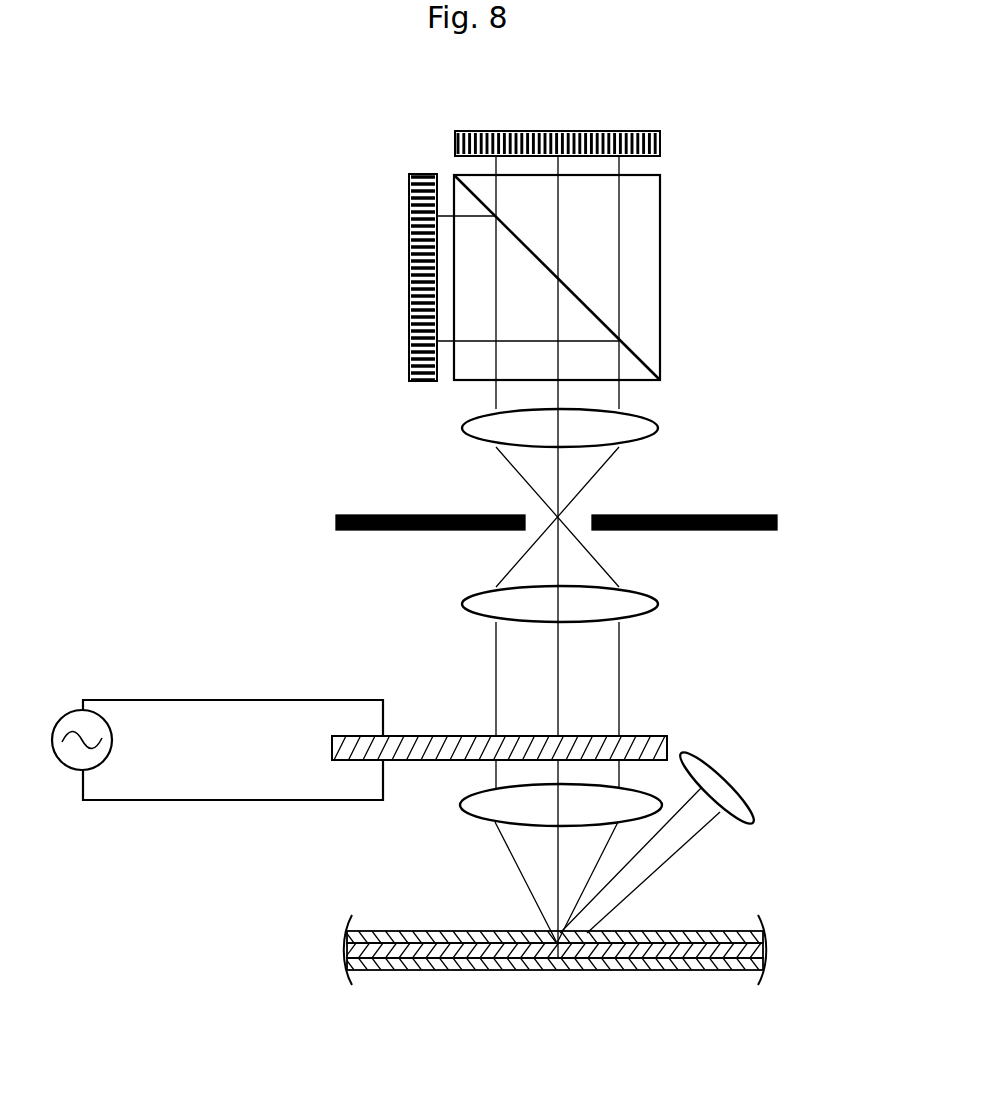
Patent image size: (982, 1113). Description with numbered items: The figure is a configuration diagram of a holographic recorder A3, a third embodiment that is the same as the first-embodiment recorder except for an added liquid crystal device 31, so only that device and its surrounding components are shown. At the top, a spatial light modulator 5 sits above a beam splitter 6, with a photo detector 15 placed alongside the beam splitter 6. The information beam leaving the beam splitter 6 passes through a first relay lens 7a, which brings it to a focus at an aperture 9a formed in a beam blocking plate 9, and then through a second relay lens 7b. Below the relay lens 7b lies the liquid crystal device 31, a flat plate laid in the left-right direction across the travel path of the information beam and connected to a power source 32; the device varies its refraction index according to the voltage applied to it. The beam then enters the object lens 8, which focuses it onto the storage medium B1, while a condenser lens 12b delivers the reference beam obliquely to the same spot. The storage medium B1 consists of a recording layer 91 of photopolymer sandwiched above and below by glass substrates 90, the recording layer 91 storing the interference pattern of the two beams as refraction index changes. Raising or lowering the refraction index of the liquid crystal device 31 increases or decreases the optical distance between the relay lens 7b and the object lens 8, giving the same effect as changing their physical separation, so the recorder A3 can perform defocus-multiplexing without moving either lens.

The holographic recorder A3 is at (237, 135).
The spatial light modulator 5 is at (660, 140).
The beam splitter 6 is at (660, 265).
The photo detector 15 is at (407, 258).
The relay lens 7a is at (462, 428).
The relay lens 7b is at (462, 604).
The beam blocking plate 9 is at (688, 513).
The aperture 9a is at (592, 515).
The liquid crystal device 31 is at (667, 736).
The power source 32 is at (65, 712).
The object lens 8 is at (460, 806).
The condenser lens 12b is at (753, 824).
The substrate 90 is at (766, 935).
The recording layer 91 is at (768, 950).
The storage medium B1 is at (617, 990).